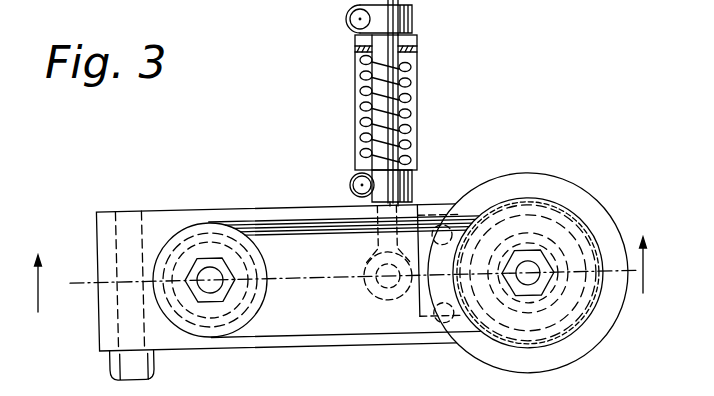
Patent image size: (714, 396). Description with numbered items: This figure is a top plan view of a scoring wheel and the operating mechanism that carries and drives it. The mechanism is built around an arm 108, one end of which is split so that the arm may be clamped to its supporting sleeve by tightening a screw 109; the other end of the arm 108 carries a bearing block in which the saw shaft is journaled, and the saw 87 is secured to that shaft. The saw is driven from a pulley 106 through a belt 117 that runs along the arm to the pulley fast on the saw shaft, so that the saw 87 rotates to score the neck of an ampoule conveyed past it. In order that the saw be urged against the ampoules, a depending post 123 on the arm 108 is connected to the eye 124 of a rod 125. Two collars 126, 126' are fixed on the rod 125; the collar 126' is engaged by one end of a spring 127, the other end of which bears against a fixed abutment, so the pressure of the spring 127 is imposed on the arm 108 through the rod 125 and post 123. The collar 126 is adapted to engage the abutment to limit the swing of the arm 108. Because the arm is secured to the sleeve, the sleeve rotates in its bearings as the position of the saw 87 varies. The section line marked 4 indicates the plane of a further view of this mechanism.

The section line 4- 4 is at (337, 274).
The saw 87 is at (599, 341).
The pulley 106 is at (212, 336).
The arm 108 is at (276, 210).
The screw 109 is at (115, 228).
The belt 117 is at (306, 236).
The depending post 123 is at (377, 302).
The eye 124 is at (366, 284).
The rod 125 is at (398, 118).
The collar 126 is at (412, 18).
The collar 126' is at (416, 184).
The spring 127 is at (407, 157).